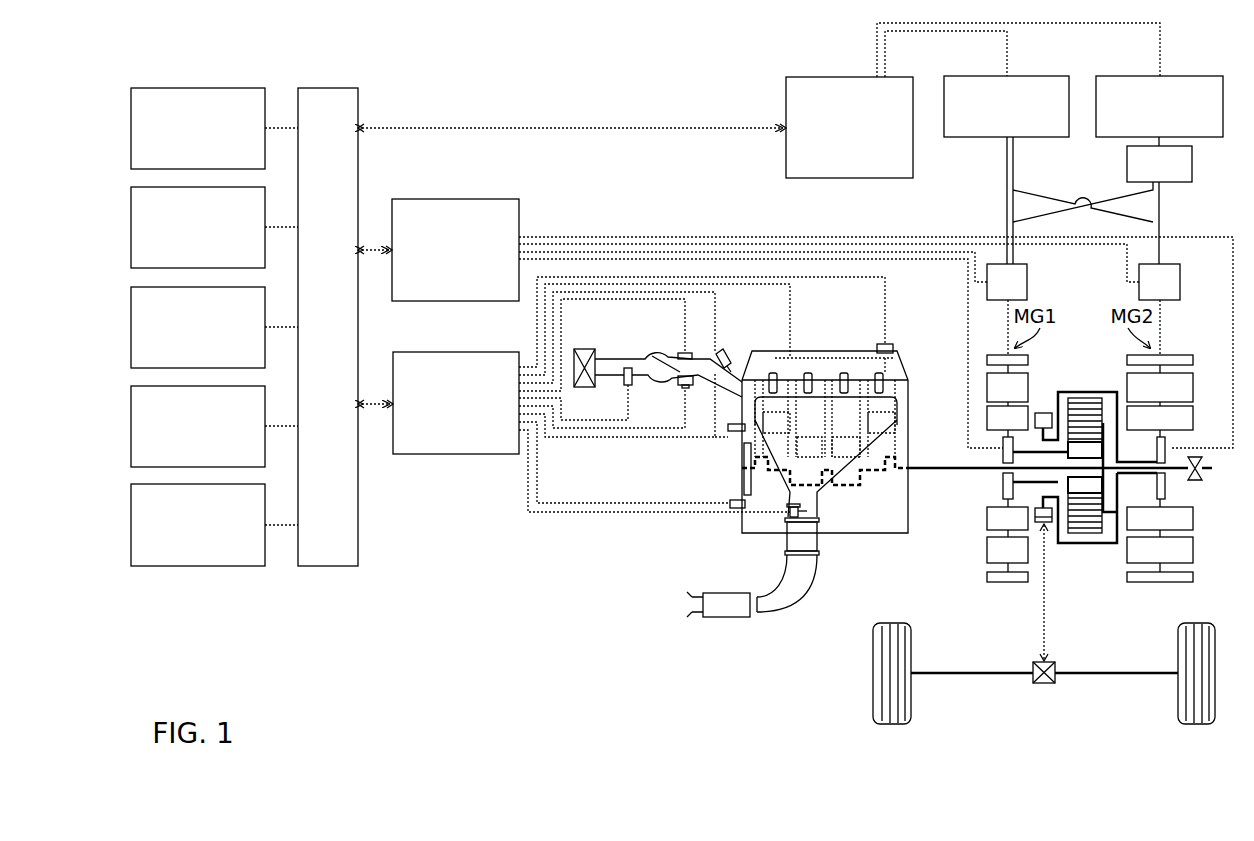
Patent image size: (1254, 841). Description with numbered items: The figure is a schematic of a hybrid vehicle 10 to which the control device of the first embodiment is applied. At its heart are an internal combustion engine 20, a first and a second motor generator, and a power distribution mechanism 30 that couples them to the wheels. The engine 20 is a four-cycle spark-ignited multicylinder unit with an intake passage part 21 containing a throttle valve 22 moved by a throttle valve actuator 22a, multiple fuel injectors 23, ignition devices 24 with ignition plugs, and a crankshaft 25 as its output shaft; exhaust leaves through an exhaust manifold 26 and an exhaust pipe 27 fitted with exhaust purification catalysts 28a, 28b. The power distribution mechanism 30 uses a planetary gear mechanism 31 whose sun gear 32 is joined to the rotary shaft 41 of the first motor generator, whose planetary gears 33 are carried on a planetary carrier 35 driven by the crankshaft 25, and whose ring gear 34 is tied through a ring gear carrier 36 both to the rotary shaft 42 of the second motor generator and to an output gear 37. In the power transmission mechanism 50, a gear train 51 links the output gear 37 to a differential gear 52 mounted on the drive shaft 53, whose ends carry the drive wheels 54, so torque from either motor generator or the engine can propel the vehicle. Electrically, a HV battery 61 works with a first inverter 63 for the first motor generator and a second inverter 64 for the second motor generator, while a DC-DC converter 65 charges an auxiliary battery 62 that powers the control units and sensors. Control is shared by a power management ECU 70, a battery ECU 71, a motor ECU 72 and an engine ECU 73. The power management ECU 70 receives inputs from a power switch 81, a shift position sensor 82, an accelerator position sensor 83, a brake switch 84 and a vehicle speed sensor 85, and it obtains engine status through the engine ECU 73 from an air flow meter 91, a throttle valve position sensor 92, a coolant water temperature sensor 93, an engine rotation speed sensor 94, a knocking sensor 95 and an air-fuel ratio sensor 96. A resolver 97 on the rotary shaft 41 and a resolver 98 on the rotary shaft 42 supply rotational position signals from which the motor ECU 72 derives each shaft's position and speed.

The hybrid vehicle 10 is at (495, 665).
The internal combustion engine 20 is at (660, 232).
The intake passage part 21 is at (655, 378).
The throttle valve 22 is at (652, 357).
The throttle valve actuator 22a is at (690, 386).
The fuel injectors 23 is at (722, 352).
The ignition devices 24 is at (773, 373).
The crankshaft 25 is at (941, 470).
The exhaust manifold 26 is at (820, 505).
The exhaust pipe 27 is at (803, 588).
The exhaust purification catalyst 28a is at (818, 545).
The exhaust purification catalyst 28b is at (727, 617).
The power distribution mechanism 30 is at (1112, 603).
The planetary gear mechanism 31 is at (1078, 388).
The sun gear 32 is at (1103, 450).
The planetary gears 33 is at (1082, 412).
The ring gear 34 is at (1085, 537).
The planetary carrier 35 is at (1104, 423).
The ring gear carrier 36 is at (1110, 543).
The output gear 37 is at (1046, 526).
The rotary shaft of motor generator MG1 41 is at (1003, 440).
The rotary shaft of motor generator MG2 42 is at (1138, 475).
The power transmission mechanism 50 is at (1013, 620).
The gear train 51 is at (1046, 630).
The differential gear 52 is at (1043, 683).
The drive shaft 53 is at (967, 675).
The drive wheels 54 is at (893, 724).
The HV battery 61 is at (1055, 76).
The auxiliary battery 62 is at (1208, 76).
The first inverter 63 is at (1028, 282).
The second inverter 64 is at (1181, 282).
The DC-DC converter 65 is at (1193, 164).
The power management ECU 70 is at (333, 88).
The battery ECU 71 is at (848, 77).
The motor ECU 72 is at (455, 199).
The engine ECU 73 is at (452, 454).
The power switch 81 is at (131, 128).
The shift position sensor 82 is at (131, 226).
The accelerator position sensor 83 is at (131, 326).
The brake switch 84 is at (131, 424).
The vehicle speed sensor 85 is at (131, 524).
The air flow meter 91 is at (624, 380).
The throttle valve position sensor 92 is at (683, 352).
The coolant water temperature sensor 93 is at (733, 431).
The engine rotation speed sensor 94 is at (733, 500).
The knocking sensor 95 is at (890, 344).
The air-fuel ratio sensor 96 is at (790, 516).
The resolver 97 is at (1003, 462).
The resolver 98 is at (1165, 447).